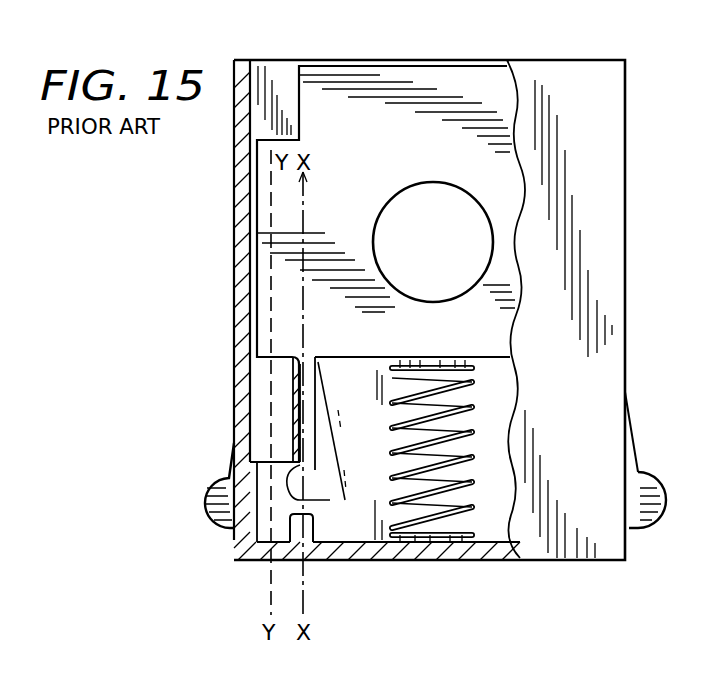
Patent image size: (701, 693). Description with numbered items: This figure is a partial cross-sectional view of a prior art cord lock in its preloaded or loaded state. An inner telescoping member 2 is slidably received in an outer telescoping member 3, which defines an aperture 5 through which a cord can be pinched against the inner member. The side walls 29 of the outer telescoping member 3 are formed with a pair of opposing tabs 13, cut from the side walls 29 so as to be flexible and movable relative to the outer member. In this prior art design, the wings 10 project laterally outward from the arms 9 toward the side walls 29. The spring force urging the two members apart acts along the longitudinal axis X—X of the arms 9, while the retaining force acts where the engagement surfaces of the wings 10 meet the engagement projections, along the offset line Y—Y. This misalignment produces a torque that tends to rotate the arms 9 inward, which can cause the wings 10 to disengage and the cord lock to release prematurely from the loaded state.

The inner telescoping member 2 is at (400, 96).
The outer telescoping member 3 is at (612, 240).
The aperture 5 is at (470, 238).
The arm 9 is at (323, 432).
The wing 10 is at (300, 485).
The tab 13 is at (204, 497).
The side wall 29 is at (233, 336).